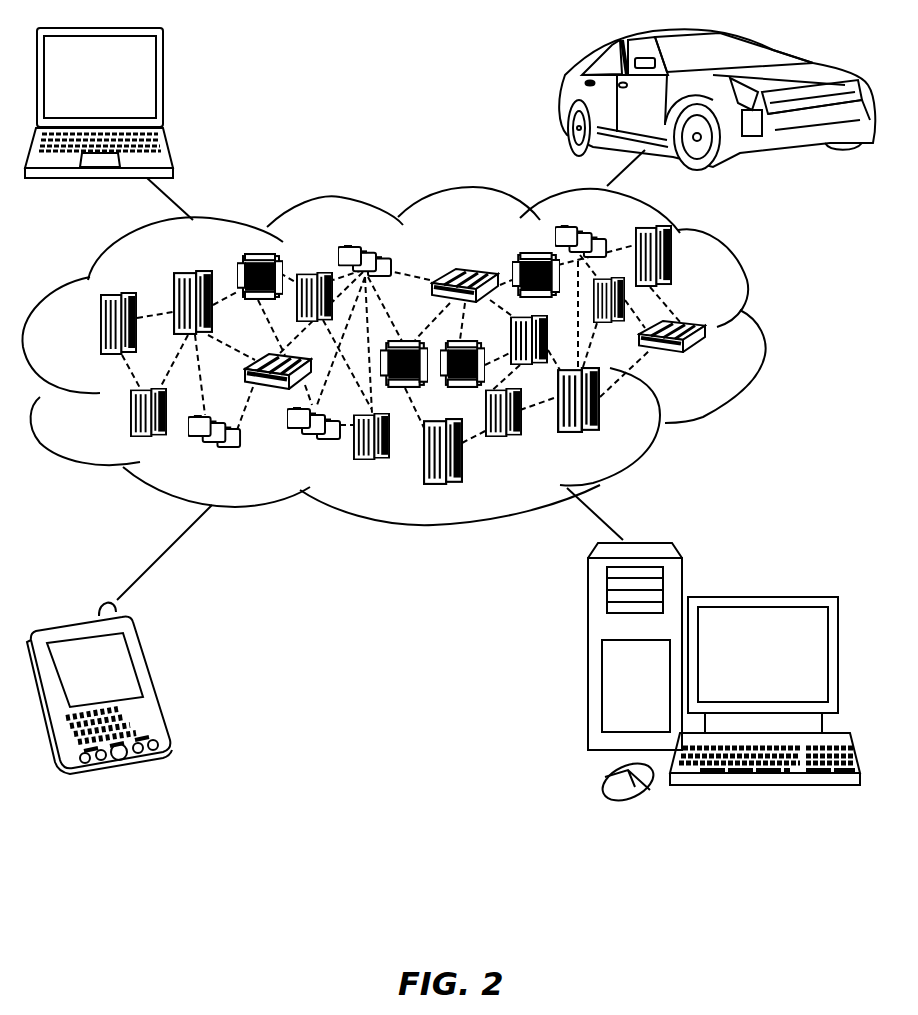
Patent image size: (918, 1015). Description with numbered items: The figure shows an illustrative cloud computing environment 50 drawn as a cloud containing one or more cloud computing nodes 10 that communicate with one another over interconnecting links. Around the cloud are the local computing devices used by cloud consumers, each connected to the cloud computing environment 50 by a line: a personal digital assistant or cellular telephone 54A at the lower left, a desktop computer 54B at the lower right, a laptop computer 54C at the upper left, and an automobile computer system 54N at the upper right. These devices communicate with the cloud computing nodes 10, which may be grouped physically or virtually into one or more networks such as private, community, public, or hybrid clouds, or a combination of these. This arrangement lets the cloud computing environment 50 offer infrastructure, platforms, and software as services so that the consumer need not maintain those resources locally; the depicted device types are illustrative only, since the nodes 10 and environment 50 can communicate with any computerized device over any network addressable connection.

The laptop computer 54C is at (163, 86).
The automobile computer system 54N is at (560, 100).
The cloud computing environment 50 is at (763, 333).
The cloud computing node 10 is at (708, 360).
The personal digital assistant (PDA) or cellular telephone 54A is at (153, 683).
The desktop computer 54B is at (760, 597).